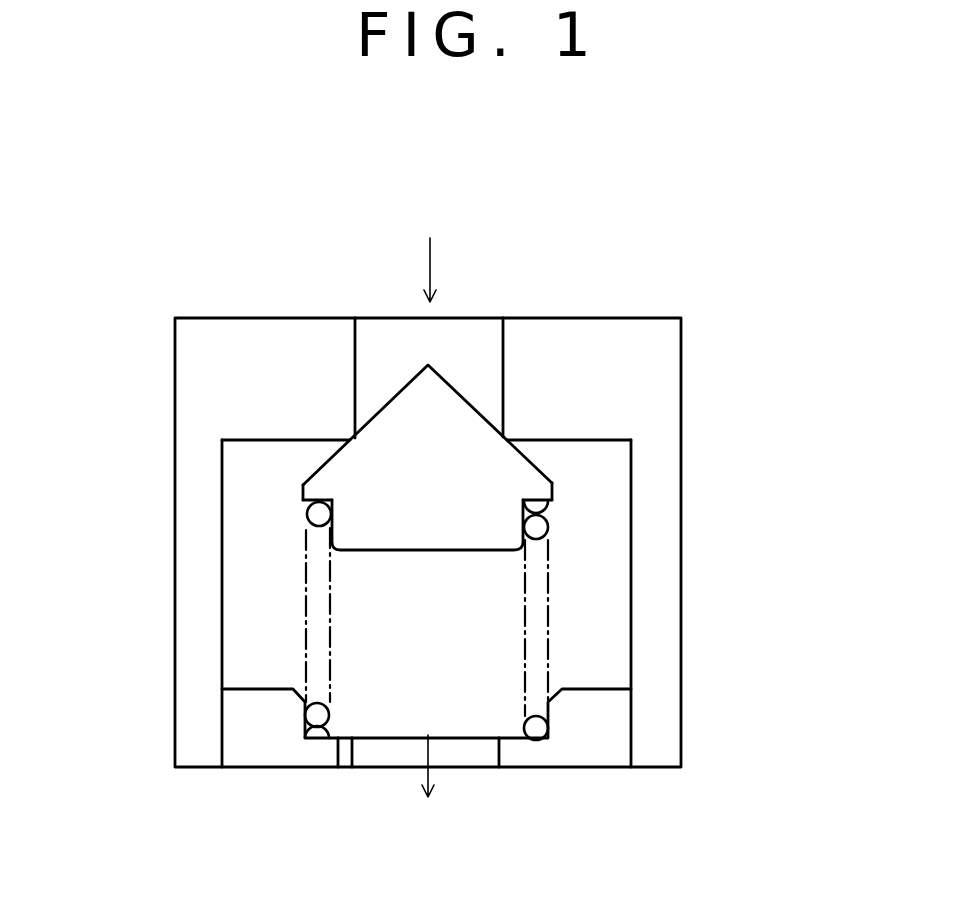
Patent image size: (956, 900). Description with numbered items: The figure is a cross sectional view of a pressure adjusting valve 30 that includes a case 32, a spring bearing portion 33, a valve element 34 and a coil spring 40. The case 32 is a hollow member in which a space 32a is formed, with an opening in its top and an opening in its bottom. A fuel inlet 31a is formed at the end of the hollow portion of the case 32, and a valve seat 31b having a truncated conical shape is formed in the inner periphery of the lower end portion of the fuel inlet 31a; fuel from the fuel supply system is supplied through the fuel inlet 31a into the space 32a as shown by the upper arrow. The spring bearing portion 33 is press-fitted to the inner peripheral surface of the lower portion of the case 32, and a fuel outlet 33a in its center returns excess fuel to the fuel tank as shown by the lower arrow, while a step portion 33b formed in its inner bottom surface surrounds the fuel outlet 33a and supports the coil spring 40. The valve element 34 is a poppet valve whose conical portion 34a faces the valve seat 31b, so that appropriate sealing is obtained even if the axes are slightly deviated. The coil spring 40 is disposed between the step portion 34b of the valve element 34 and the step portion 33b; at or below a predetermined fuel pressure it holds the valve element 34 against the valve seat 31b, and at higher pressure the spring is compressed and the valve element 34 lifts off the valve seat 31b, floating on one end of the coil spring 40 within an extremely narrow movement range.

The pressure adjusting valve 30 is at (689, 312).
The fuel inlet 31a is at (470, 338).
The valve seat 31b is at (503, 437).
The case 32 is at (665, 523).
The space 32a is at (607, 607).
The spring bearing portion 33 is at (610, 727).
The fuel outlet 33a is at (482, 758).
The step portion 33b is at (338, 770).
The valve element 34 is at (289, 493).
The conical portion 34a is at (325, 445).
The step portion 34b is at (303, 502).
The coil spring 40 is at (290, 640).